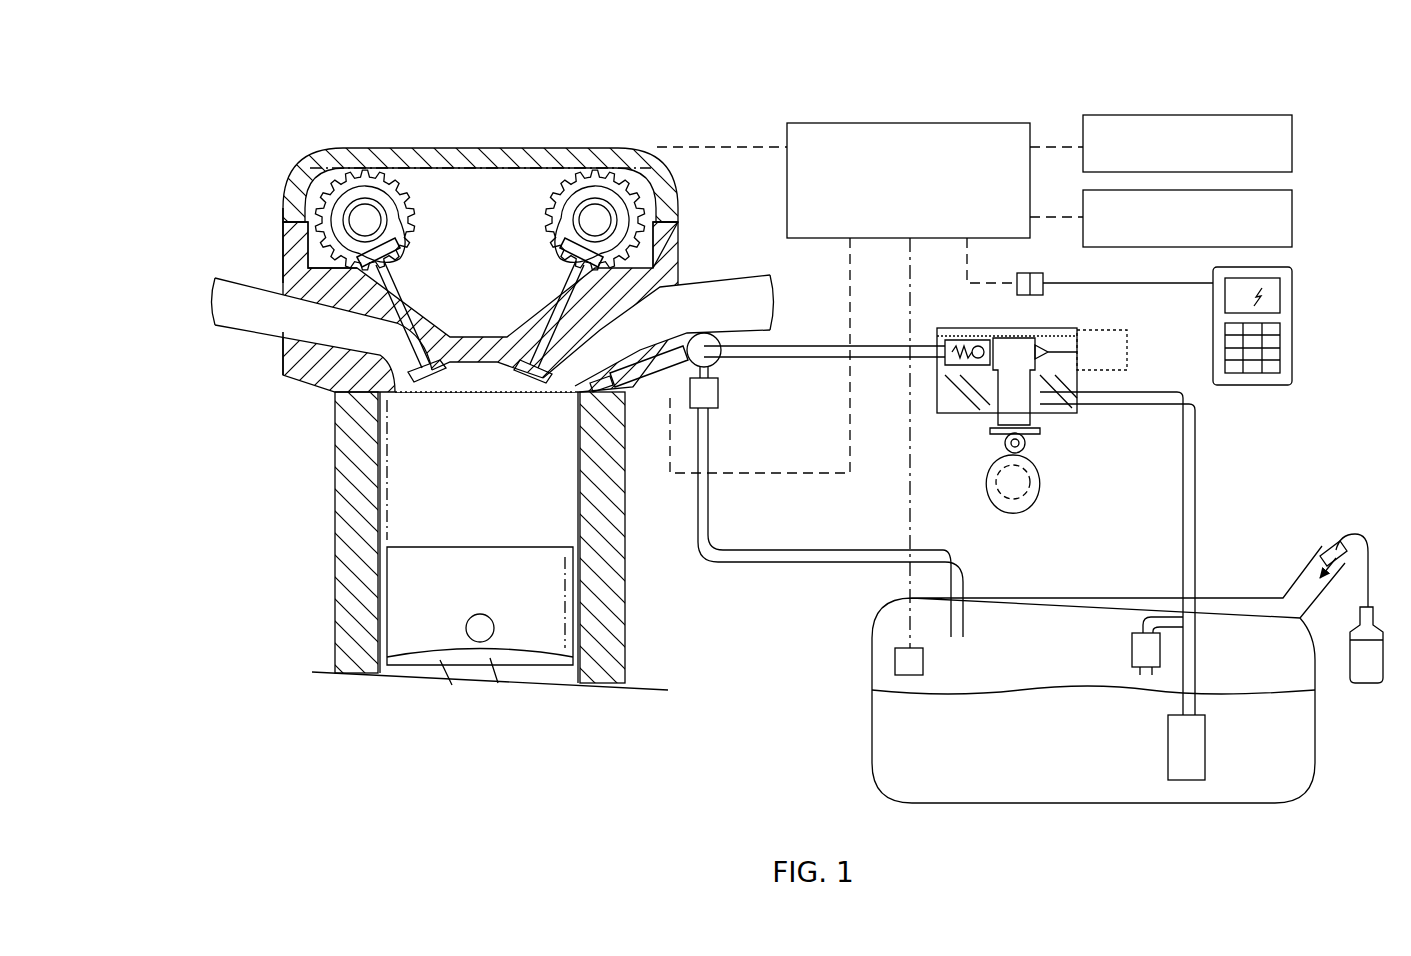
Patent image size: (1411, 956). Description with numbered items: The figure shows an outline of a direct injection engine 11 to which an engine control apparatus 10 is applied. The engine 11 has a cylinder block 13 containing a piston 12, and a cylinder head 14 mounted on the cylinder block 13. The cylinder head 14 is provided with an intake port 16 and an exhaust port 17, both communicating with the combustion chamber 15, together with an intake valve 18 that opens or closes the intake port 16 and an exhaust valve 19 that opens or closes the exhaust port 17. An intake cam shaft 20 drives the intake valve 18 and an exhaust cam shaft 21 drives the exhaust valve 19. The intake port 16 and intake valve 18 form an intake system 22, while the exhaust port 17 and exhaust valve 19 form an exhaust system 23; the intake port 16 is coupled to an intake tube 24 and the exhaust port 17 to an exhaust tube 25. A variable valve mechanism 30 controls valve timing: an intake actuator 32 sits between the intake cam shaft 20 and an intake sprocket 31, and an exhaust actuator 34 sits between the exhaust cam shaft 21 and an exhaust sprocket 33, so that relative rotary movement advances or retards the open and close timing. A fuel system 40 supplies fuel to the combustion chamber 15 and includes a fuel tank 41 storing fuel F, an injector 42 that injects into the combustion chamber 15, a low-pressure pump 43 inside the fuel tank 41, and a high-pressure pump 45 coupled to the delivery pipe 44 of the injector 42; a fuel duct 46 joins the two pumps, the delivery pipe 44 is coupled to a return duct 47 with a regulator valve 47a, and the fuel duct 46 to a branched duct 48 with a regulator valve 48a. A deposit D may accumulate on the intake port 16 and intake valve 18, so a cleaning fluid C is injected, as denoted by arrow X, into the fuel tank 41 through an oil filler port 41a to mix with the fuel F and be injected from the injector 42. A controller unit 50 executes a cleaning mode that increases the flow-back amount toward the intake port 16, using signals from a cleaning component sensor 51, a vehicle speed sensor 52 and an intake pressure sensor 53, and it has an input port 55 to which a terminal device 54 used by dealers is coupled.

The engine control apparatus 10 is at (1074, 112).
The engine 11 is at (260, 176).
The piston 12 is at (484, 552).
The cylinder block 13 is at (335, 540).
The cylinder head 14 is at (281, 244).
The combustion chamber 15 is at (480, 368).
The intake port 16 is at (558, 332).
The exhaust port 17 is at (397, 338).
The intake valve 18 is at (540, 383).
The exhaust valve 19 is at (425, 382).
The intake cam shaft 20 is at (596, 212).
The exhaust cam shaft 21 is at (366, 212).
The intake system 22 is at (632, 320).
The exhaust system 23 is at (328, 320).
The intake tube 24 is at (740, 286).
The exhaust tube 25 is at (222, 292).
The variable valve mechanism 30 is at (624, 152).
The intake sprocket 31 is at (568, 198).
The intake actuator 32 is at (571, 206).
The exhaust sprocket 33 is at (391, 200).
The exhaust actuator 34 is at (398, 206).
The fuel system 40 is at (1230, 468).
The fuel tank 41 is at (1050, 597).
The oil filler port 41a is at (1298, 590).
The injector 42 is at (640, 382).
The low-pressure pump 43 is at (1205, 752).
The delivery pipe 44 is at (714, 354).
The high-pressure pump 45 is at (960, 414).
The fuel duct 46 is at (1184, 448).
The return duct 47 is at (760, 563).
The regulator valve 47a is at (718, 398).
The branched duct 48 is at (1150, 616).
The regulator valve 48a is at (1132, 646).
The controller unit 50 is at (850, 123).
The cleaning component sensor 51 is at (895, 661).
The vehicle speed sensor 52 is at (1292, 143).
The intake pressure sensor 53 is at (1292, 216).
The terminal device 54 is at (1292, 306).
The input port 55 is at (1015, 288).
The deposit D is at (562, 360).
The fuel F is at (1000, 706).
The arrow X is at (1355, 534).
The cleaning fluid C is at (1366, 684).